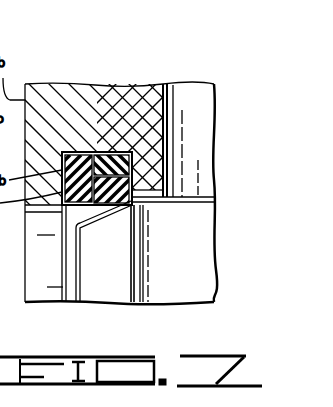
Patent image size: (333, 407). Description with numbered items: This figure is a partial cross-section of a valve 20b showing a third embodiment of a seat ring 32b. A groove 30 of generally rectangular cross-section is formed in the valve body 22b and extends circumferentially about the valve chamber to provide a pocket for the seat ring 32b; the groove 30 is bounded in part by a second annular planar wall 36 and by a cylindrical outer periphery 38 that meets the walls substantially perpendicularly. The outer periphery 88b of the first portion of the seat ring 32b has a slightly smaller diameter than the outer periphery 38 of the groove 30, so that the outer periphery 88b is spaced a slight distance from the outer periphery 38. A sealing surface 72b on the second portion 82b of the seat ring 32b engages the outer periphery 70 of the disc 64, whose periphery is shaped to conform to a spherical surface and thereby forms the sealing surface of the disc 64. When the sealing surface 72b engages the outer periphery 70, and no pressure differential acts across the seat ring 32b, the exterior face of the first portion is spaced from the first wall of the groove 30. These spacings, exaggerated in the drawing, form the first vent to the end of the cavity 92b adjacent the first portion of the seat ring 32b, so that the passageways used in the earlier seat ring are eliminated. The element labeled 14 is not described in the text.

The valve 20b is at (172, 58).
The valve body 22b is at (140, 88).
The seat ring 32b is at (90, 165).
The cylindrical outer periphery 38 is at (107, 152).
The outer periphery 88b is at (86, 170).
The groove 30 is at (168, 111).
The second annular planar wall 36 is at (164, 153).
The second portion 82b is at (134, 199).
The sealing surface 72b is at (140, 236).
The cavity 92b is at (86, 212).
The outer periphery 70 is at (107, 297).
The disc 64 is at (127, 291).
The rod 14 is at (75, 215).